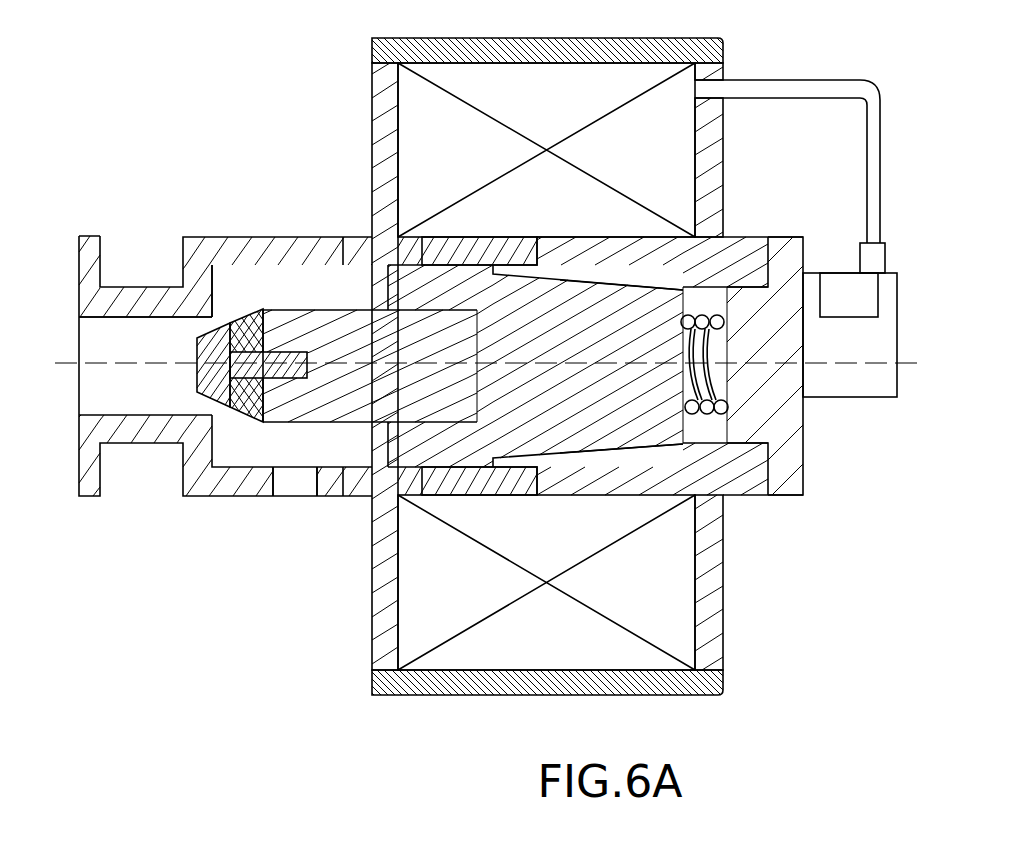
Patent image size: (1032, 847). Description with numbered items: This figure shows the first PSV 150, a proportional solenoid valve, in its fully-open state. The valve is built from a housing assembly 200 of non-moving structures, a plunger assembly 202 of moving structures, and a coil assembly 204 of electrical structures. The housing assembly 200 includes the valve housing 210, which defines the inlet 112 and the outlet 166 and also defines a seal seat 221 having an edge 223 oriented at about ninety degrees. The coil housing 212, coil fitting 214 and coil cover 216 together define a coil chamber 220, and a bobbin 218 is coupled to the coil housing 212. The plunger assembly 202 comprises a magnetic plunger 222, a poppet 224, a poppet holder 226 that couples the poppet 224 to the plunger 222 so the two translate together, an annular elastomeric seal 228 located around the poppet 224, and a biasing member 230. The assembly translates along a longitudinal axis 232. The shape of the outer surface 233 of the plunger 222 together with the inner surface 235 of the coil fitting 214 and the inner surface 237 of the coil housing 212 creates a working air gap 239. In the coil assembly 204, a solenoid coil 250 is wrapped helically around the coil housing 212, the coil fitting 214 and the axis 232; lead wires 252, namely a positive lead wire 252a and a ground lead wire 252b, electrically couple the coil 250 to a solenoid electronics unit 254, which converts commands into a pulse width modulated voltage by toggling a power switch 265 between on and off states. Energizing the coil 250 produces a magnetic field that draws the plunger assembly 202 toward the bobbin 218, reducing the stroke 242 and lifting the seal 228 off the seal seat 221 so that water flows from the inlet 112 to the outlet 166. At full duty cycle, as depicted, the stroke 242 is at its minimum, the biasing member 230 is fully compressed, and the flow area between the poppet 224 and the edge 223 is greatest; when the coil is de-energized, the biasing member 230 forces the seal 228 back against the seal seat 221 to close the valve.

The first PSV 150 is at (248, 119).
The valve housing 210 is at (227, 247).
The seal seat 221 is at (208, 310).
The edge 223 is at (210, 352).
The poppet 224 is at (200, 342).
The seal 228 is at (252, 397).
The poppet holder 226 is at (331, 378).
The plunger 222 is at (524, 376).
The outlet 166 is at (97, 338).
The longitudinal axis 232 is at (90, 373).
The inlet 112 is at (296, 503).
The plunger assembly 202 is at (375, 434).
The housing assembly 200 is at (362, 662).
The coil assembly 204 is at (744, 66).
The solenoid coil 250 is at (448, 87).
The coil chamber 220 is at (414, 155).
The coil fitting 214 is at (450, 487).
The coil cover 216 is at (413, 695).
The coil housing 212 is at (715, 578).
The bobbin 218 is at (790, 432).
The biasing member 230 is at (698, 412).
The stroke 242 is at (787, 307).
The outer surface 233 is at (510, 459).
The inner surface 235 is at (487, 455).
The inner surface 237 is at (583, 460).
The working air gap 239 is at (606, 473).
The lead wires 252 is at (787, 161).
The positive lead wire 252a is at (879, 148).
The ground lead wire 252b is at (866, 123).
The solenoid electronics unit 254 is at (835, 350).
The power switch 265 is at (835, 305).